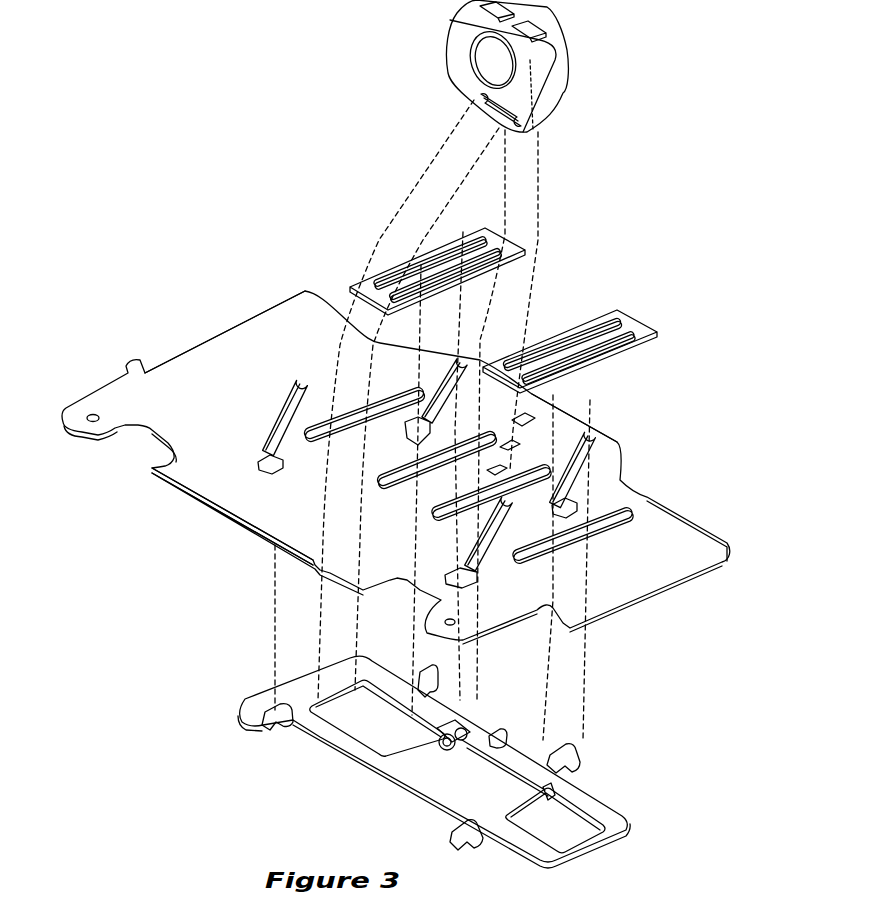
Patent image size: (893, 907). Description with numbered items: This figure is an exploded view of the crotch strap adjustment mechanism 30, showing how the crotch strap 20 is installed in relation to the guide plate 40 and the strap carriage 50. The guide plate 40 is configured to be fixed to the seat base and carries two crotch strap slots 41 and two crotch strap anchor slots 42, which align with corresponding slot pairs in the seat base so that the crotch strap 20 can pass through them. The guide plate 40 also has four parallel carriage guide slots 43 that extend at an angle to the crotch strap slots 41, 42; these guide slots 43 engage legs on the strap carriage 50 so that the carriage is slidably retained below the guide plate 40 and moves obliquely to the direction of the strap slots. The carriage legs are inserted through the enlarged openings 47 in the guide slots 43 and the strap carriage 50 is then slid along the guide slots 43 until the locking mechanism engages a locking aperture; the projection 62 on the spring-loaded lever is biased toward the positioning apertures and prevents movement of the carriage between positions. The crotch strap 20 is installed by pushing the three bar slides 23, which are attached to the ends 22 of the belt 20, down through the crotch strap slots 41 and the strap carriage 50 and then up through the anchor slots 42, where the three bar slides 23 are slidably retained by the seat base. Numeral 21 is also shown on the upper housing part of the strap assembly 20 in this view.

The crotch strap 20 is at (529, 175).
The ring housing 21 is at (556, 63).
The ends of the belt 22 is at (423, 240).
The three bar slides 23 is at (367, 280).
The crotch strap adjustment mechanism 30 is at (170, 582).
The guide plate 40 is at (118, 350).
The crotch strap slots 41 is at (152, 470).
The crotch strap anchor slots 42 is at (320, 558).
The carriage guide slots 43 is at (292, 405).
The enlarged openings 47 is at (310, 435).
The strap carriage 50 is at (478, 762).
The projection 62 is at (507, 740).